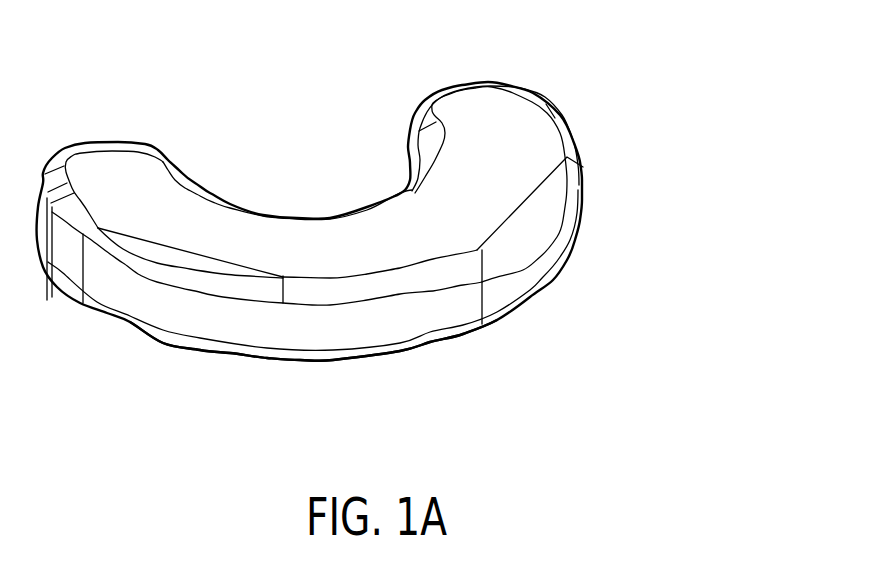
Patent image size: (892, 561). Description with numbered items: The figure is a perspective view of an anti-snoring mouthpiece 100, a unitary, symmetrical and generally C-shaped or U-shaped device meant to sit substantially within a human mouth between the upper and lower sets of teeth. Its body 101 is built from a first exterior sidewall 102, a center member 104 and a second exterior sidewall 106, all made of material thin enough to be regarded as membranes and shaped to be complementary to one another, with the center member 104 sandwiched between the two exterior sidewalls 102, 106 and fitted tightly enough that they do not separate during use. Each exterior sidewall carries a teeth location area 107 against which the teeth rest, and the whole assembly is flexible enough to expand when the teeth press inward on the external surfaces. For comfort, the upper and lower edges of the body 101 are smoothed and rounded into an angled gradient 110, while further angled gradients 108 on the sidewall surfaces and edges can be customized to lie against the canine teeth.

The anti-snoring mouthpiece 100 is at (646, 87).
The body 101 is at (342, 159).
The first exterior sidewall 102 is at (112, 180).
The center member 104 is at (217, 323).
The second exterior sidewall 106 is at (317, 360).
The teeth location area 107 is at (197, 227).
The angled gradients 108 is at (165, 253).
The angled gradient 110 is at (556, 218).